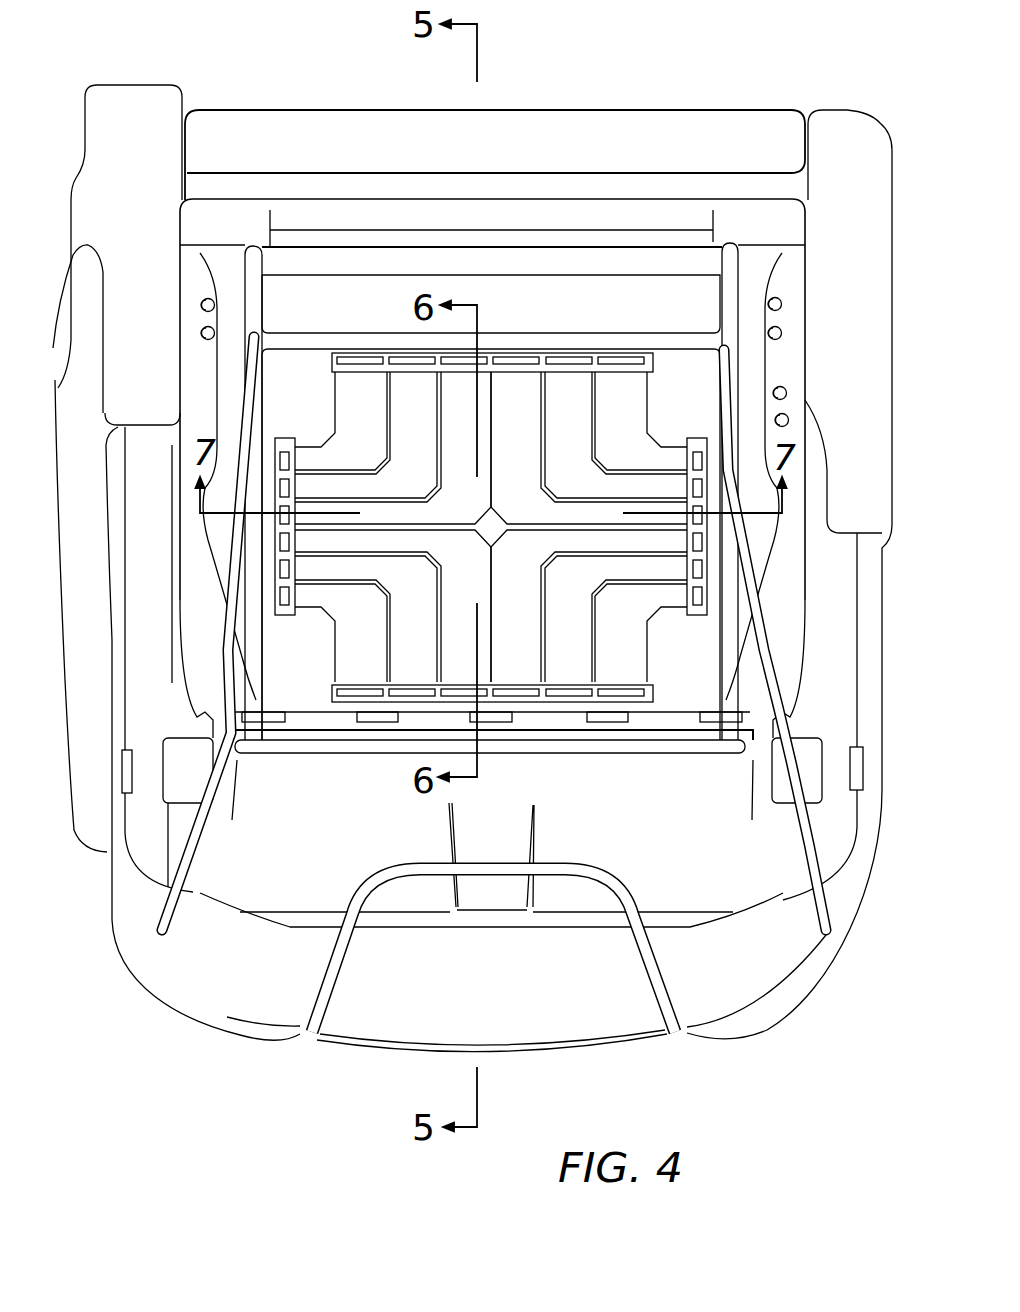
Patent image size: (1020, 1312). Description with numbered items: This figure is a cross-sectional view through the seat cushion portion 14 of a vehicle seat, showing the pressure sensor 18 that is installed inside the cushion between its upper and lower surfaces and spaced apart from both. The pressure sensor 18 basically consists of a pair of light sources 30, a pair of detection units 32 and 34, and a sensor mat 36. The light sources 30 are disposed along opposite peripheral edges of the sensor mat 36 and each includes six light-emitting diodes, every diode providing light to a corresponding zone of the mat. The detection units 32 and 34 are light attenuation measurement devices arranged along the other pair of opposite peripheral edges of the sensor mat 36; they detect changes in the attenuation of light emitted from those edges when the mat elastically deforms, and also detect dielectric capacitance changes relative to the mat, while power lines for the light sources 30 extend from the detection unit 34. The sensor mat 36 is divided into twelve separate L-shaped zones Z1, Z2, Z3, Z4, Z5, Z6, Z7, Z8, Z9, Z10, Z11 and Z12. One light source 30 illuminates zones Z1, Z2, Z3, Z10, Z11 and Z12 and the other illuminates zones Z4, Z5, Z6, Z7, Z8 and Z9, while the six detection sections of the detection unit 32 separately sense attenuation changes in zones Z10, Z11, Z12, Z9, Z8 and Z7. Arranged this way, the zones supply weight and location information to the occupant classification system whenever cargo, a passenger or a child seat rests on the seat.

The seat cushion portion 14 is at (478, 533).
The pressure sensor 18 is at (632, 230).
The light sources 30 is at (290, 614).
The detection unit 32 is at (653, 699).
The detection unit 34 is at (332, 361).
The sensor mat 36 is at (481, 527).
The zone Z1 is at (341, 421).
The zone Z2 is at (366, 435).
The zone Z3 is at (393, 448).
The zone Z4 is at (641, 421).
The zone Z5 is at (616, 435).
The zone Z6 is at (589, 448).
The zone Z7 is at (641, 633).
The zone Z8 is at (616, 619).
The zone Z9 is at (589, 606).
The zone Z10 is at (341, 633).
The zone Z11 is at (366, 619).
The zone Z12 is at (393, 606).